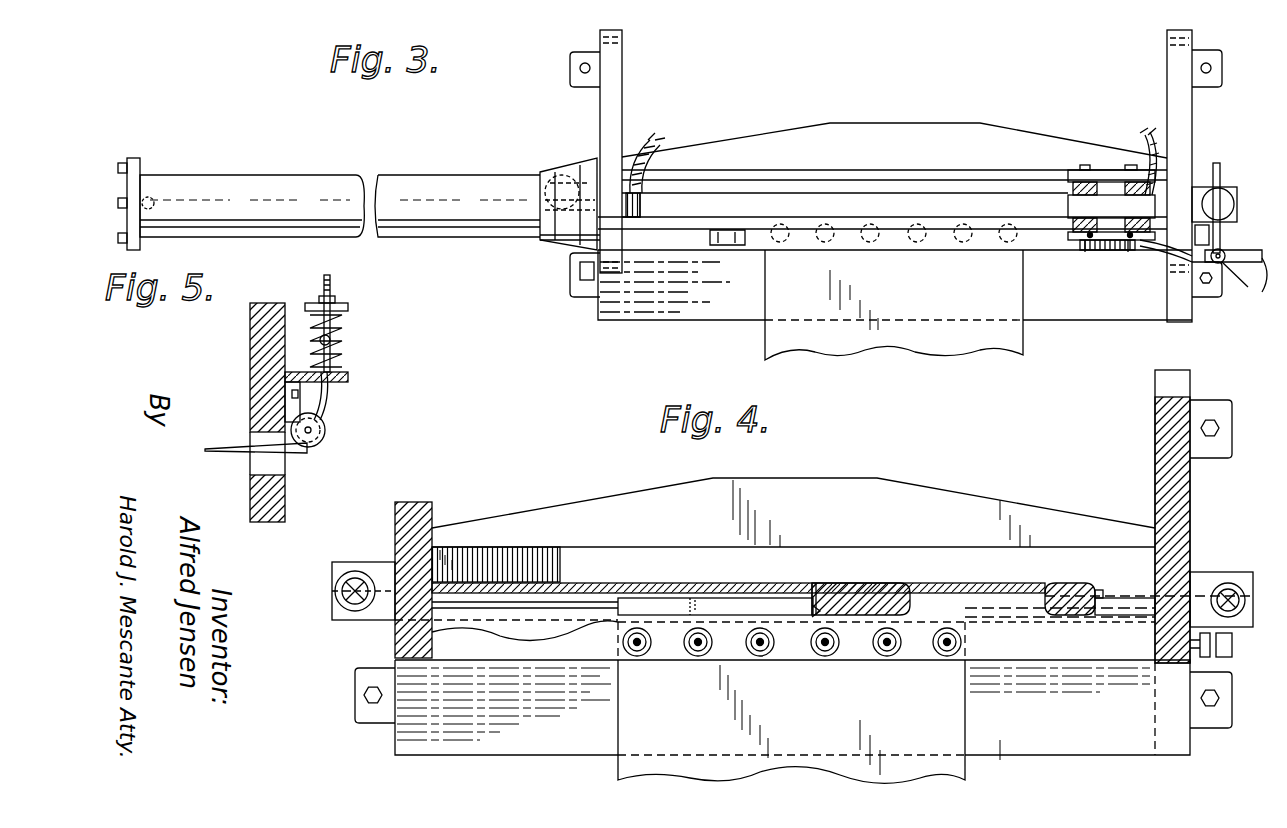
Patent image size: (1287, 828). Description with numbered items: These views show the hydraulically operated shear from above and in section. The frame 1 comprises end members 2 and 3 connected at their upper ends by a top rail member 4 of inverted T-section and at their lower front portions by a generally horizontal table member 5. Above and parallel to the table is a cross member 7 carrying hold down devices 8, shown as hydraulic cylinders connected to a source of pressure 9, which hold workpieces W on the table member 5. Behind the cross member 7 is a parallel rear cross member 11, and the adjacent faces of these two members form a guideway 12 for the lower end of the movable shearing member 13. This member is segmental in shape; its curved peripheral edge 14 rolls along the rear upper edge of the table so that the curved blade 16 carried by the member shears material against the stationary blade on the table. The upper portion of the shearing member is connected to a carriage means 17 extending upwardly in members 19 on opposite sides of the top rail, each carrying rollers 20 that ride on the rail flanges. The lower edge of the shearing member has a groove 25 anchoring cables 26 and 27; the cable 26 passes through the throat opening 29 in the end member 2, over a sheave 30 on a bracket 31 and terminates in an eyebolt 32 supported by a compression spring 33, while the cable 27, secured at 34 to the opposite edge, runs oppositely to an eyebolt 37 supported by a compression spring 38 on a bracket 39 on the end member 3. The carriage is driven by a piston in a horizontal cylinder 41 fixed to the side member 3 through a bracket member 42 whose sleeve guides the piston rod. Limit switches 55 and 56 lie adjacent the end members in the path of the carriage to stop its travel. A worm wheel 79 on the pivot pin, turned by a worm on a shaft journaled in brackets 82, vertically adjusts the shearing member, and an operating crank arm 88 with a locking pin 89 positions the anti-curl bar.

In FIG. 3, the frame 1 is at (720, 320).
In FIG. 4, the frame 1 is at (945, 490).
In FIG. 3, the end member 2 is at (1192, 110).
In FIG. 4, the end member 2 is at (1190, 483).
In FIG. 5, the end member 2 is at (250, 355).
In FIG. 3, the end member 3 is at (600, 116).
In FIG. 4, the end member 3 is at (395, 513).
In FIG. 3, the top rail member 4 is at (905, 190).
In FIG. 3, the table member 5 is at (680, 318).
In FIG. 4, the table member 5 is at (522, 753).
In FIG. 3, the cross member 7 is at (695, 250).
In FIG. 4, the cross member 7 is at (1070, 660).
In FIG. 3, the hold down devices 8 is at (780, 243).
In FIG. 4, the hold down devices 8 is at (645, 655).
In FIG. 3, the source of pressure 9 is at (1262, 292).
In FIG. 3, the rear cross member 11 is at (985, 170).
In FIG. 4, the rear cross member 11 is at (840, 547).
In FIG. 4, the guideway 12 is at (745, 598).
In FIG. 4, the movable shearing member 13 is at (880, 583).
In FIG. 4, the curved peripheral edge 14 is at (800, 604).
In FIG. 4, the curved blade 16 is at (810, 618).
In FIG. 3, the carriage means 17 is at (1100, 168).
In FIG. 3, the carriage members 19 is at (1068, 173).
In FIG. 3, the rollers 20 is at (1125, 188).
In FIG. 4, the groove 25 is at (818, 583).
In FIG. 4, the cable 26 is at (1150, 600).
In FIG. 5, the cable 26 is at (330, 405).
In FIG. 4, the cable 27 is at (650, 590).
In FIG. 5, the throat opening 29 is at (300, 465).
In FIG. 5, the sheave 30 is at (325, 440).
In FIG. 3, the bracket 31 is at (1232, 187).
In FIG. 4, the bracket 31 is at (1200, 572).
In FIG. 5, the bracket 31 is at (348, 378).
In FIG. 4, the eyebolt 32 is at (1232, 640).
In FIG. 5, the eyebolt 32 is at (332, 282).
In FIG. 4, the compression spring 33 is at (1232, 586).
In FIG. 5, the compression spring 33 is at (345, 323).
In FIG. 4, the cable securing point 34 is at (1085, 583).
In FIG. 4, the eyebolt 37 is at (335, 585).
In FIG. 4, the compression spring 38 is at (335, 600).
In FIG. 3, the bracket 39 is at (560, 172).
In FIG. 4, the bracket 39 is at (350, 562).
In FIG. 3, the horizontal cylinder 41 is at (420, 178).
In FIG. 3, the bracket member 42 is at (540, 247).
In FIG. 3, the limit switch 55 is at (1165, 200).
In FIG. 3, the limit switch 56 is at (650, 203).
In FIG. 3, the worm wheel 79 is at (1105, 250).
In FIG. 3, the brackets 82 is at (1088, 252).
In FIG. 4, the operating crank arm 88 is at (1212, 657).
In FIG. 3, the locking pin 89 is at (1195, 240).
In FIG. 4, the locking pin 89 is at (1200, 645).
In FIG. 3, the workpiece W is at (945, 345).
In FIG. 4, the workpiece W is at (965, 732).